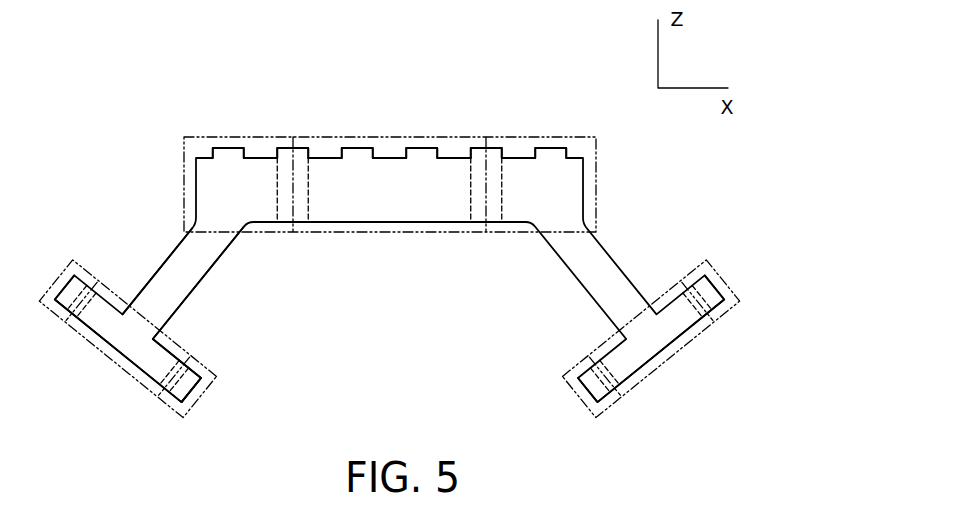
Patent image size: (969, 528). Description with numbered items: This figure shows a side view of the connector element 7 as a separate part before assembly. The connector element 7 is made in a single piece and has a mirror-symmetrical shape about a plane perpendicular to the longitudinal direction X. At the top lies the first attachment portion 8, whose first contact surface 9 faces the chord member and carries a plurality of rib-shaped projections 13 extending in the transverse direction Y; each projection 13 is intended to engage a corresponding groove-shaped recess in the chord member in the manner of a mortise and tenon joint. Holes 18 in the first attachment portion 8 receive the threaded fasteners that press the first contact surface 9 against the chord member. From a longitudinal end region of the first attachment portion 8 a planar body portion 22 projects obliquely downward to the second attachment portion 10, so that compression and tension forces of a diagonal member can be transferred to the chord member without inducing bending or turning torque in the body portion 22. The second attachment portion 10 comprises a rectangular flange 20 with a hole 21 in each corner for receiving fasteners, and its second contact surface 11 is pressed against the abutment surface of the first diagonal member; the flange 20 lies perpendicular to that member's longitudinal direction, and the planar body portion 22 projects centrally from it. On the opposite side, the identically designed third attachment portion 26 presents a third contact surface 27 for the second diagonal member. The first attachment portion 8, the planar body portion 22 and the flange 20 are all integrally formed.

The connector element 7 is at (116, 60).
The first attachment portion 8 is at (598, 182).
The first contact surface 9 is at (392, 156).
The rib-shaped projections 13 is at (228, 153).
The holes 18 is at (310, 194).
The planar body portion 22 is at (183, 278).
The second contact surface 11 is at (125, 368).
The third contact surface 27 is at (648, 368).
The flange 20 is at (204, 389).
The second attachment portion 10 is at (174, 418).
The third attachment portion 26 is at (606, 418).
The hole 21 is at (84, 303).